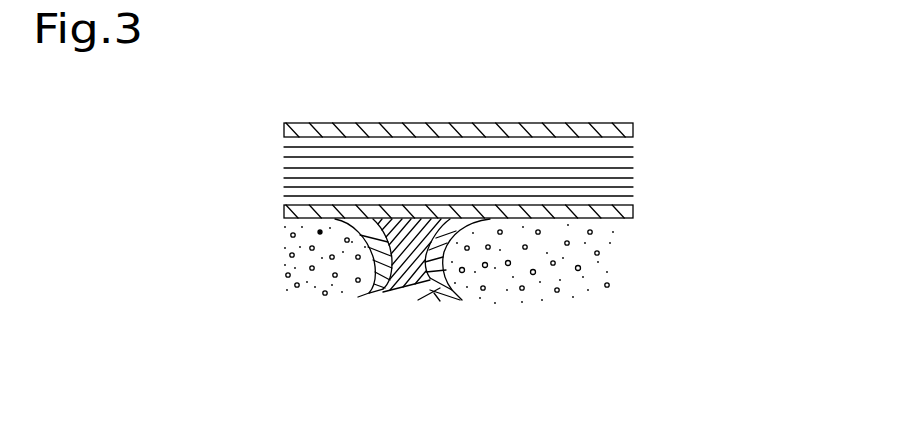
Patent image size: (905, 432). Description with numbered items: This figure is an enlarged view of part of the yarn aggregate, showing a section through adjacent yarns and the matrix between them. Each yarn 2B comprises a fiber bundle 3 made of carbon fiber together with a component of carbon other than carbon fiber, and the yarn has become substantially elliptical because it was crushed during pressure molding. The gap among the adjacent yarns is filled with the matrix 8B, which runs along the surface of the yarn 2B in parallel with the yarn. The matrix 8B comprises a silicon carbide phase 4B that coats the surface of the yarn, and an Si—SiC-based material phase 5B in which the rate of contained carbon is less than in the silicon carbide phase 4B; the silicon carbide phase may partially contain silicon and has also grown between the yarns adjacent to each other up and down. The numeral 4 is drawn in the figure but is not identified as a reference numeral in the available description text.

The surface layer 4 is at (440, 130).
The matrix 8B is at (392, 192).
The yarn 2B is at (276, 249).
The silicon carbide phase 4B is at (379, 300).
The Si—SiC-based material phase 5B is at (401, 301).
The fiber bundle 3 is at (545, 273).